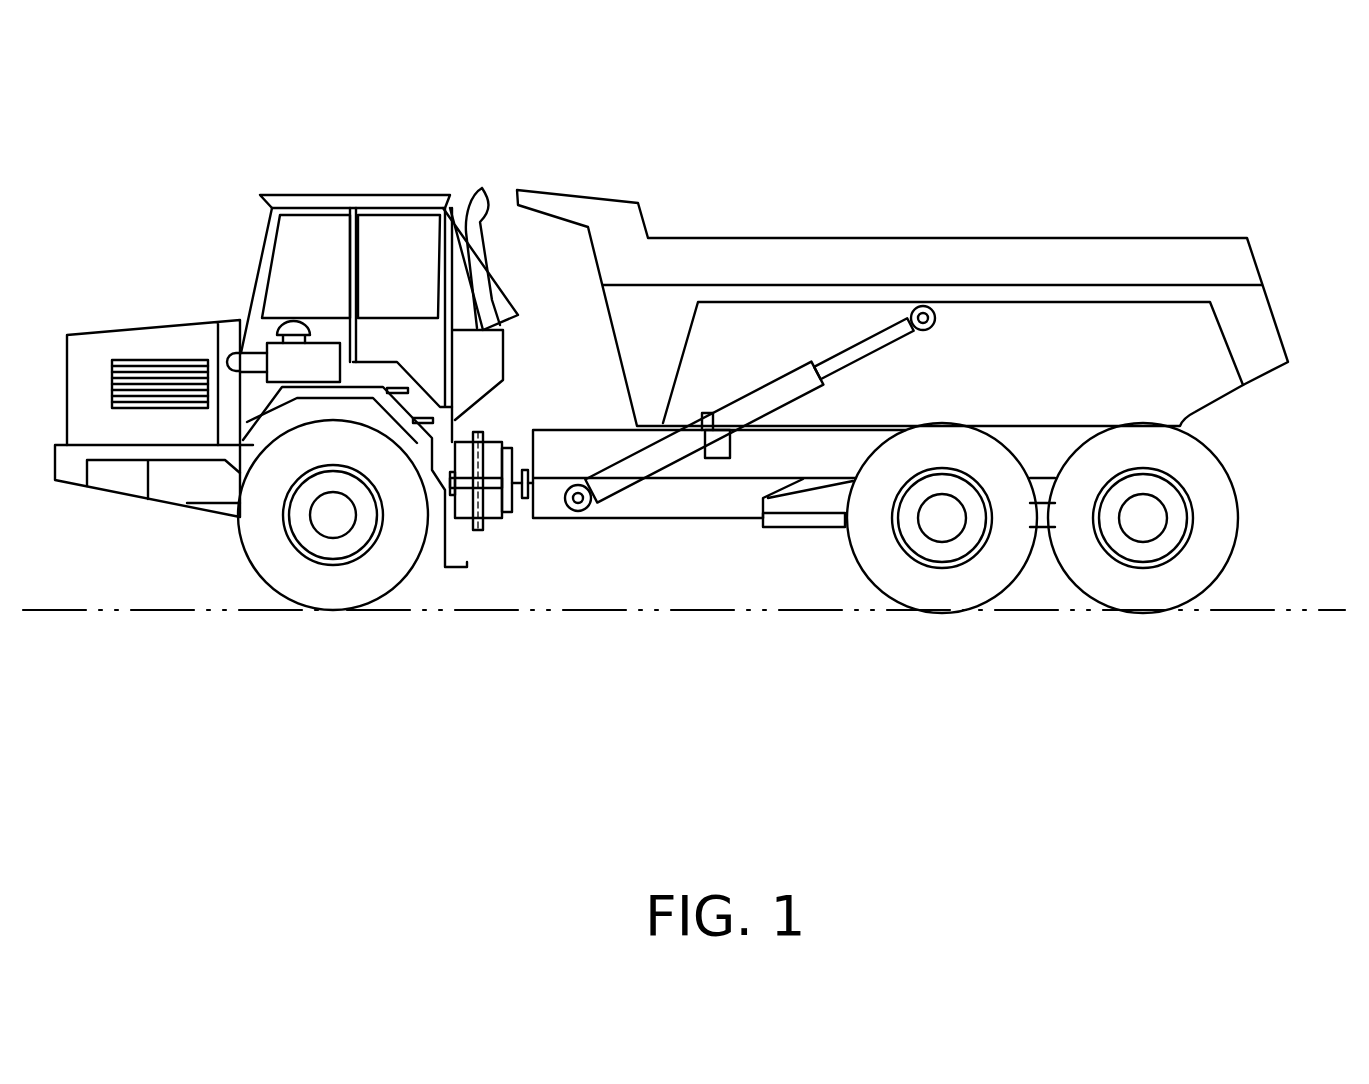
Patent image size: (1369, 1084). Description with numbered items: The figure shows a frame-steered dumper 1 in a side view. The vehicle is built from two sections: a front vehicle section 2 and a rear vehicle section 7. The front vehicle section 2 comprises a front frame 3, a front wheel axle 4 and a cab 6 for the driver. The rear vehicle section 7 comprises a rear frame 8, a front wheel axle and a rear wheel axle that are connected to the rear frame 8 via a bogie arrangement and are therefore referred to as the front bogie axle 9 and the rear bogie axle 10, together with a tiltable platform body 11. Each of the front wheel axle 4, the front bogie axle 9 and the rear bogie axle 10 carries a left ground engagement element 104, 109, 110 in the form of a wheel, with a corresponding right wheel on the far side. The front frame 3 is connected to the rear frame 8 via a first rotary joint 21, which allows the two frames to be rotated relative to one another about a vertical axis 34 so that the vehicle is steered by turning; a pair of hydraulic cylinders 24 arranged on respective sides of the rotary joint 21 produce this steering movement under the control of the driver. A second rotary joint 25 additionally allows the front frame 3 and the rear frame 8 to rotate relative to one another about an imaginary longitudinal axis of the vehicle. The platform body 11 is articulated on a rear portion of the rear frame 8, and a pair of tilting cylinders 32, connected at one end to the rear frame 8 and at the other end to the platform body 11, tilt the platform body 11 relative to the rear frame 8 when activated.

The frame-steered dumper 1 is at (803, 172).
The front vehicle section 2 is at (365, 157).
The front frame 3 is at (450, 562).
The front wheel axle 4 is at (333, 515).
The cab 6 is at (415, 202).
The rear vehicle section 7 is at (1035, 210).
The rear frame 8 is at (665, 505).
The front bogie axle 9 is at (942, 522).
The rear bogie axle 10 is at (1143, 522).
The tiltable platform body 11 is at (1243, 320).
The first rotary joint 21 is at (515, 550).
The hydraulic cylinders 24 is at (510, 502).
The second rotary joint 25 is at (571, 540).
The tilting cylinders 32 is at (662, 453).
The vertical axis 34 is at (497, 495).
The left ground engagement element 104 is at (260, 543).
The left ground engagement element 109 is at (1003, 570).
The left ground engagement element 110 is at (1205, 570).